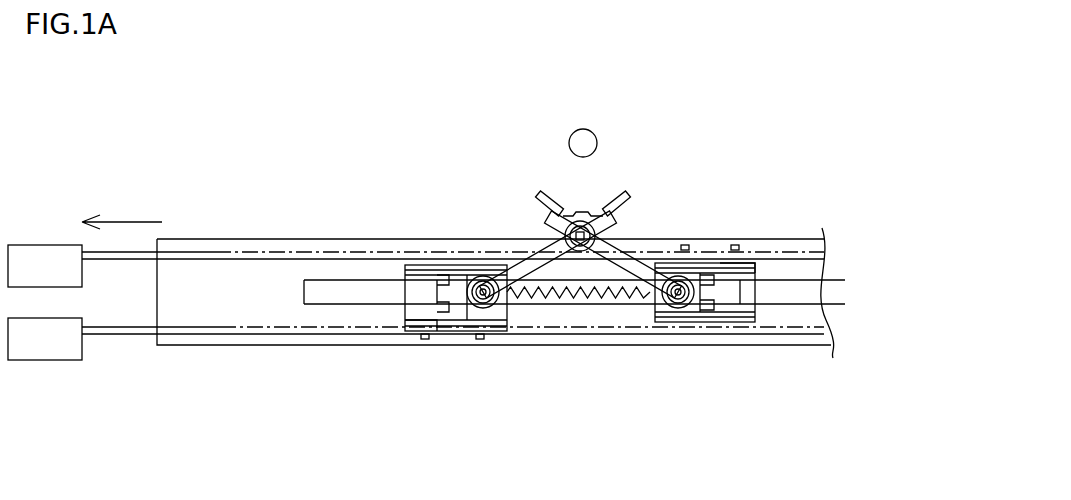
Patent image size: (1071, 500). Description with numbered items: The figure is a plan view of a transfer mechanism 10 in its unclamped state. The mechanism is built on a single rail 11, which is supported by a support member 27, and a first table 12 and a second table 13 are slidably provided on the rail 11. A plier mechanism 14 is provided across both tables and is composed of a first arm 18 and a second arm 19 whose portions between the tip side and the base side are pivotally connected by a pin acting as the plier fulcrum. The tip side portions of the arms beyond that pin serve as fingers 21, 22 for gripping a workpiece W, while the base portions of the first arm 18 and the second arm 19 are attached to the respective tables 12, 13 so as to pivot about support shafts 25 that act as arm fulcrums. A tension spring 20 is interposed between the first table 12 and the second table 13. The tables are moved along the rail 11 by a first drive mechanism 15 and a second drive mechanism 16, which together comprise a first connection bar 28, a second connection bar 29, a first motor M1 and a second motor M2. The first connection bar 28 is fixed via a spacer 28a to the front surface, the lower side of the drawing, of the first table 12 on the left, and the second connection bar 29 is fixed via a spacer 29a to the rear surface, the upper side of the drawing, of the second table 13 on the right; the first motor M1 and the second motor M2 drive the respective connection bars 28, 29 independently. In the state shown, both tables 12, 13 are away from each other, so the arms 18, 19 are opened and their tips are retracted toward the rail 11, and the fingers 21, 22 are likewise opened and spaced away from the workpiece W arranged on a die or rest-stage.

The transfer mechanism 10 is at (741, 134).
The rail 11 is at (773, 291).
The first table 12 is at (431, 249).
The second table 13 is at (711, 247).
The plier mechanism 14 is at (448, 110).
The first drive mechanism 15 is at (38, 427).
The second drive mechanism 16 is at (195, 179).
The first arm 18 is at (522, 250).
The second arm 19 is at (652, 240).
The tension spring 20 is at (553, 304).
The finger 21 is at (615, 206).
The finger 22 is at (553, 206).
The support shaft 25 is at (470, 310).
The support member 27 is at (782, 316).
The first connection bar 28 is at (213, 338).
The spacer 28a is at (410, 324).
The second connection bar 29 is at (212, 252).
The spacer 29a is at (740, 262).
The first motor M1 is at (33, 352).
The second motor M2 is at (33, 257).
The workpiece W is at (583, 138).